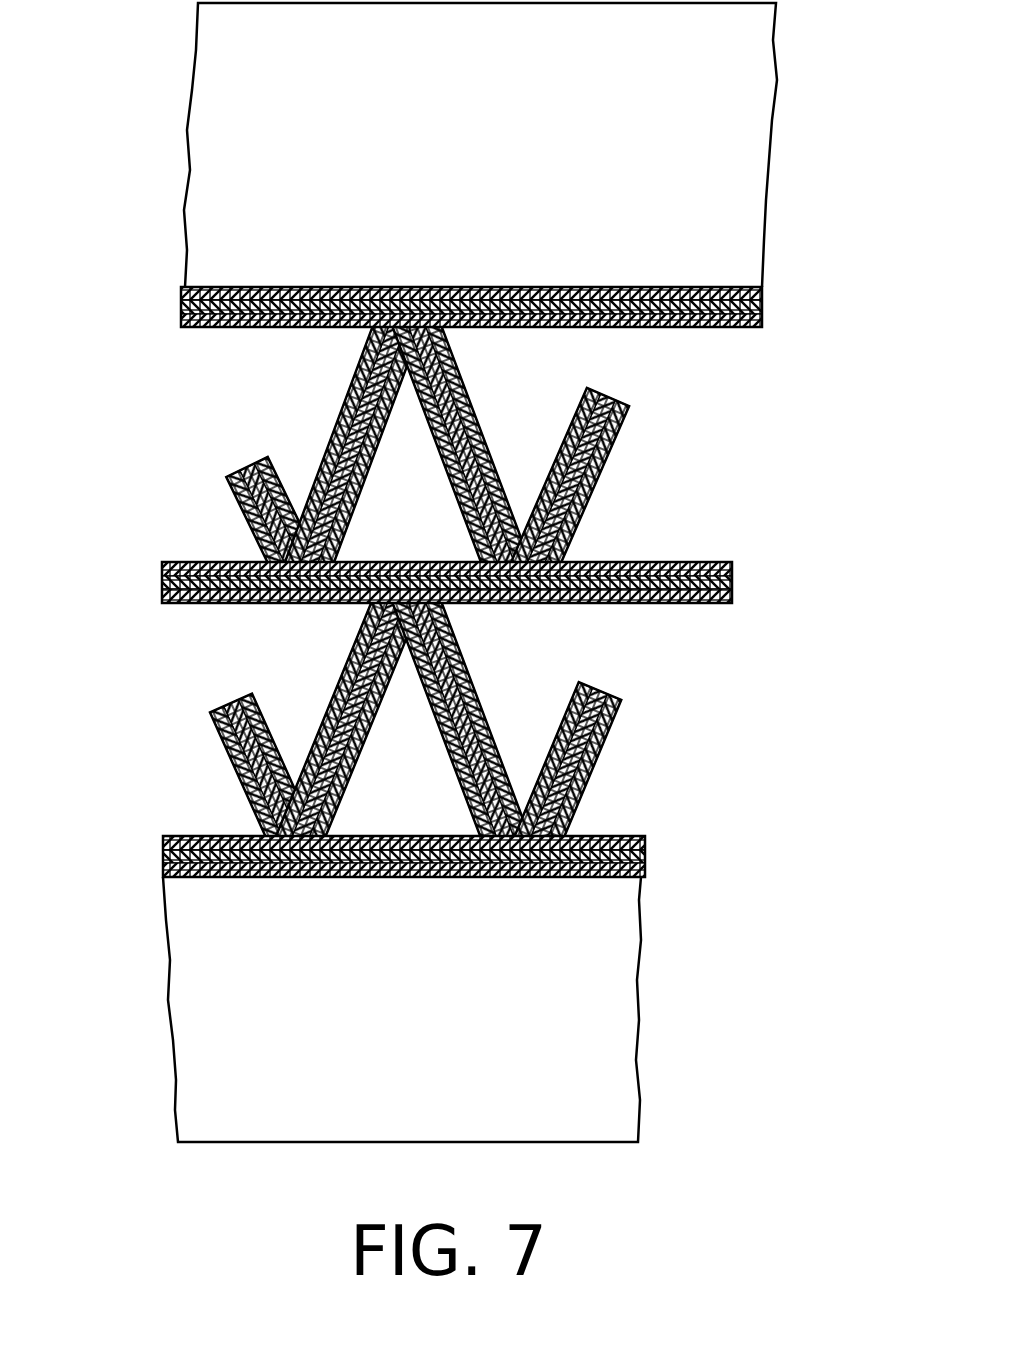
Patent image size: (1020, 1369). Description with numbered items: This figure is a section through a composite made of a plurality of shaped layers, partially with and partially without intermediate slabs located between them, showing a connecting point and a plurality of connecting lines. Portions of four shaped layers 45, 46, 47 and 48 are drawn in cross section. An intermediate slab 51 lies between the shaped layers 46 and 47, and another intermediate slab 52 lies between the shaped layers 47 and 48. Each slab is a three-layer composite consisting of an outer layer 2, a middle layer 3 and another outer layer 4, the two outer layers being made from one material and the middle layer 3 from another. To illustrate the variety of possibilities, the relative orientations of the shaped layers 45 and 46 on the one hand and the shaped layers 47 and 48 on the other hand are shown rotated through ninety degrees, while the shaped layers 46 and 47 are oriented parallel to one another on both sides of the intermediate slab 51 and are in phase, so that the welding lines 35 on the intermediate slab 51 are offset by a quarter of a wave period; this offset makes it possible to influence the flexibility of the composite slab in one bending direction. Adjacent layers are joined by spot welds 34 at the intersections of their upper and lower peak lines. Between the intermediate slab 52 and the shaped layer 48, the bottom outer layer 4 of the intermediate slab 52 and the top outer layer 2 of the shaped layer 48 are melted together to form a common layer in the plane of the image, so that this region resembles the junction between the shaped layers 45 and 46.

The outer layer 2 is at (228, 287).
The middle layer 3 is at (183, 308).
The outer layer 4 is at (235, 327).
The spot weld 34 is at (424, 287).
The welding line 35 is at (300, 605).
The shaped layer 45 is at (742, 145).
The shaped layer 46 is at (625, 410).
The shaped layer 47 is at (620, 715).
The shaped layer 48 is at (605, 965).
The intermediate slab 51 is at (732, 580).
The intermediate slab 52 is at (645, 858).